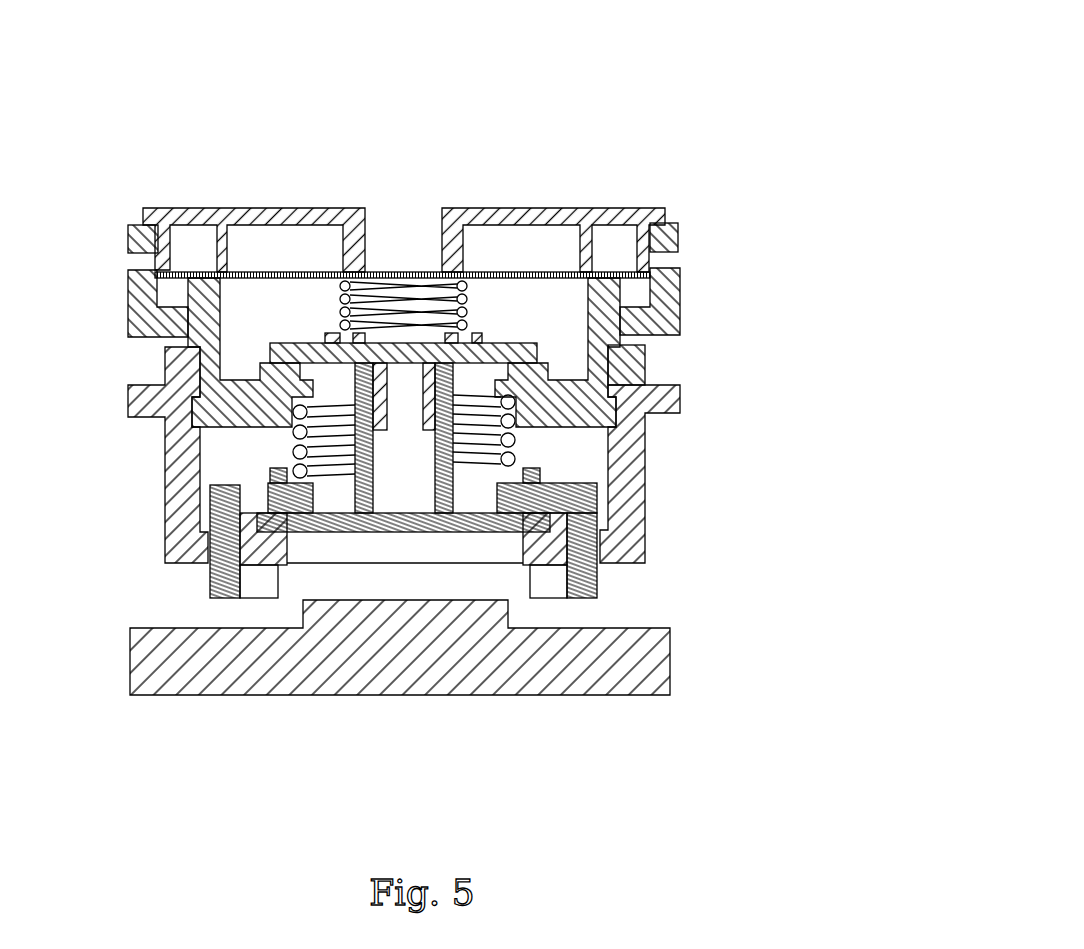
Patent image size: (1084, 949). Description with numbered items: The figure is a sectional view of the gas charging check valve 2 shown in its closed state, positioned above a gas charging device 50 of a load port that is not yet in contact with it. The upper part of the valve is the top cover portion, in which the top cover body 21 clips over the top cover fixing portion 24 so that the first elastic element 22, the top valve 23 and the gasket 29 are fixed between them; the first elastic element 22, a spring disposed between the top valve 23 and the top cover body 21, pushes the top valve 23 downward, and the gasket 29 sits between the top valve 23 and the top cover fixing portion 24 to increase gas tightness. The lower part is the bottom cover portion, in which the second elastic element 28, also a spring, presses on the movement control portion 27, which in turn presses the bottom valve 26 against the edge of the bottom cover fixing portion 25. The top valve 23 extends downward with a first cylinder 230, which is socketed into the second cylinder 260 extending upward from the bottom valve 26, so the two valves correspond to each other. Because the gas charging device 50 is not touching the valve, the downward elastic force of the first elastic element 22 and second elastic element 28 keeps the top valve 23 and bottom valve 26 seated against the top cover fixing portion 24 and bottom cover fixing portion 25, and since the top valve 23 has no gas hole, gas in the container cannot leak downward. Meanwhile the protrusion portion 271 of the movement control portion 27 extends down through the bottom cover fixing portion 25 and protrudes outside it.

The gas charging check valve 2 is at (617, 72).
The top cover body 21 is at (237, 206).
The first elastic element 22 is at (470, 300).
The top valve 23 is at (250, 353).
The first cylinder 230 is at (197, 377).
The top cover fixing portion 24 is at (665, 318).
The bottom cover fixing portion 25 is at (640, 525).
The bottom valve 26 is at (306, 540).
The second cylinder 260 is at (310, 500).
The movement control portion 27 is at (600, 490).
The protrusion portion 271 is at (597, 583).
The second elastic element 28 is at (293, 433).
The gasket 29 is at (640, 380).
The gas charging device 50 is at (650, 662).